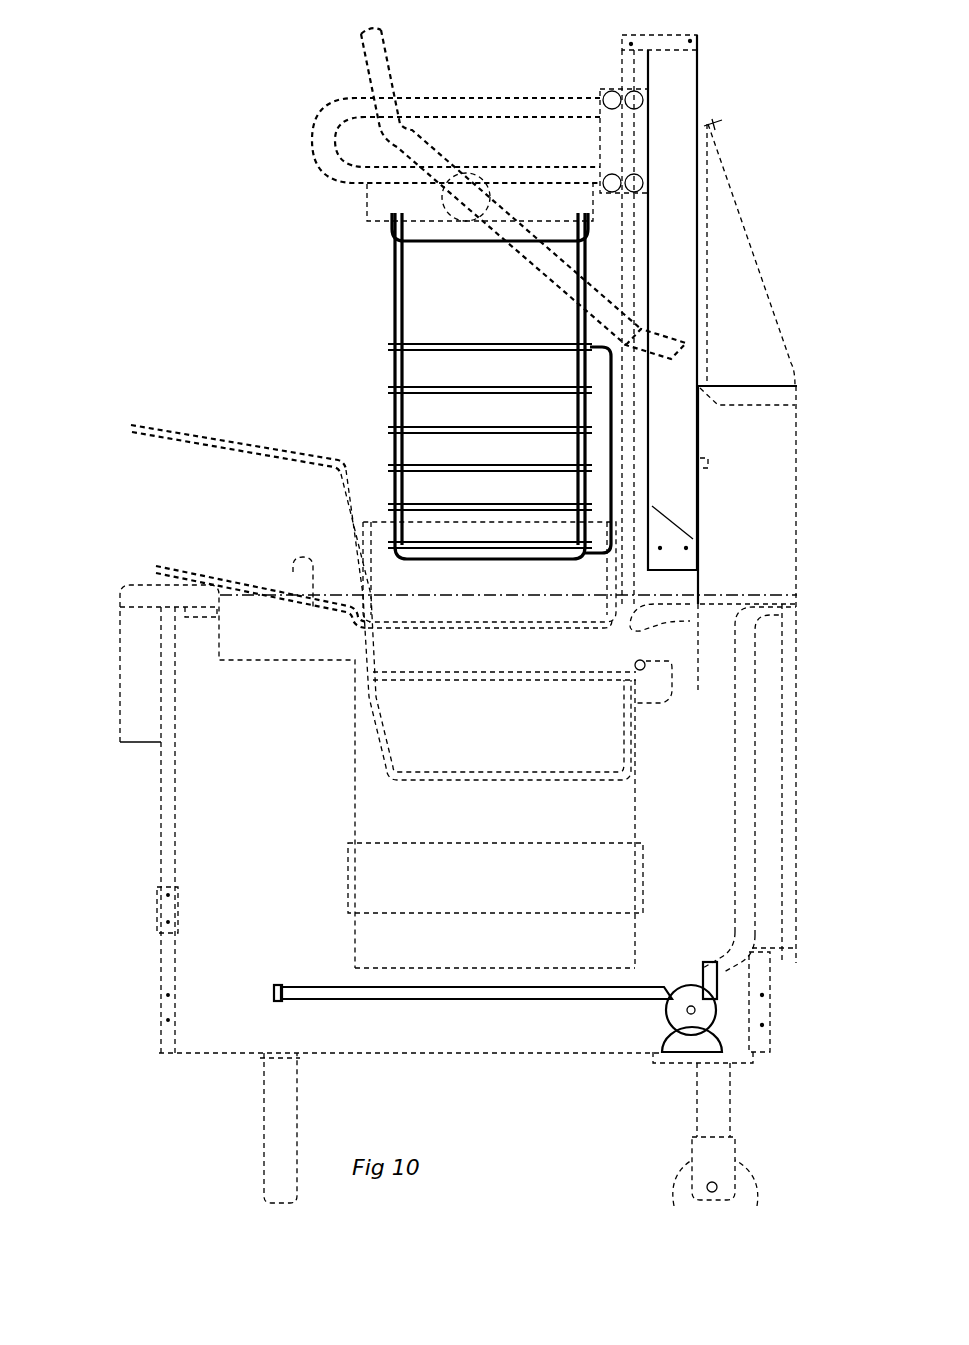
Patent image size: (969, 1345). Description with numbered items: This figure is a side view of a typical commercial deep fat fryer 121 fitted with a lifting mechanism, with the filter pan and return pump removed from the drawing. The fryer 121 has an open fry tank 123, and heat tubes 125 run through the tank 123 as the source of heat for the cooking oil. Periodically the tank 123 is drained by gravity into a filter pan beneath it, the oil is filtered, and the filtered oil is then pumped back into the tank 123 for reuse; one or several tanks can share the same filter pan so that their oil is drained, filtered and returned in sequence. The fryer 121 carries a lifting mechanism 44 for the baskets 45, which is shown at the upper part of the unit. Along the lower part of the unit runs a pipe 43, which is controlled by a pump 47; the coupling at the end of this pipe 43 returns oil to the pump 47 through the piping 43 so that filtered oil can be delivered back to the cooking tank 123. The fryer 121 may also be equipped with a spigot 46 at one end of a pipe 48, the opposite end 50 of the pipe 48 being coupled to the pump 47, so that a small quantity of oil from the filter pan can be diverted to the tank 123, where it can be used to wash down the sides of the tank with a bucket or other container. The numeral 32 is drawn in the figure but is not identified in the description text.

The commercial deep fat fryer 121 is at (134, 842).
The lifting mechanism 44 is at (387, 320).
The baskets 45 is at (131, 425).
The spigot 46 is at (670, 610).
The pump 47 is at (691, 984).
The pipe 48 is at (745, 750).
The opposite end 50 is at (714, 957).
The pipe 43 is at (378, 999).
The handle grip 32 is at (272, 986).
The fry tank 123 is at (513, 821).
The heat tubes 125 is at (495, 878).